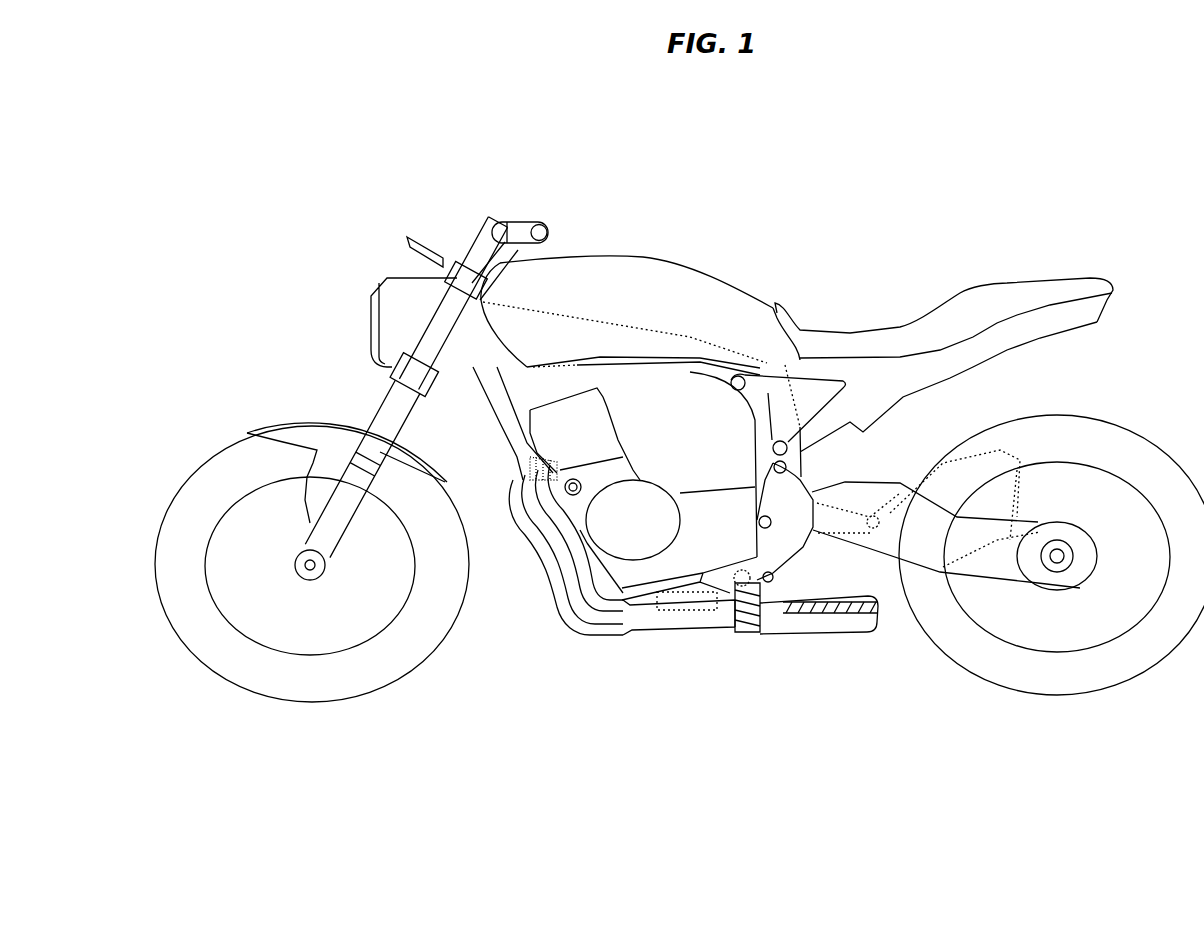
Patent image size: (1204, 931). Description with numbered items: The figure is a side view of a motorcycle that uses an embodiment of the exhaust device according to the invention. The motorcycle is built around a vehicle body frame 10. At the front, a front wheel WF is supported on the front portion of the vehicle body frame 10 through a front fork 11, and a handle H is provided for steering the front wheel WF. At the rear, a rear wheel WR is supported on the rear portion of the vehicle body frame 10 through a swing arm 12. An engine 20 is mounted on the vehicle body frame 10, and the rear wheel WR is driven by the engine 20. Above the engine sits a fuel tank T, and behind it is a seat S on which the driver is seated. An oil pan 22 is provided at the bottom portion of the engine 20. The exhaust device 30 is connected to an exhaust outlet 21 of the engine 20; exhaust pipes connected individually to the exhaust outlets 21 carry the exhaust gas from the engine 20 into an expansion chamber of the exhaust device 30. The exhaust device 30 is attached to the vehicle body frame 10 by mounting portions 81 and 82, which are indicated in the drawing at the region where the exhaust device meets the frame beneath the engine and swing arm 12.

The handle H is at (530, 222).
The fuel tank T is at (657, 258).
The vehicle body frame 10 is at (690, 337).
The seat S is at (850, 328).
The rear wheel WR is at (1148, 440).
The front wheel WF is at (190, 480).
The front fork 11 is at (388, 410).
The mounting portion 82 is at (893, 505).
The exhaust outlet 21 is at (533, 503).
The engine 20 is at (613, 542).
The oil pan 22 is at (685, 597).
The mounting portion 81 is at (747, 630).
The exhaust device 30 is at (790, 640).
The swing arm 12 is at (997, 570).